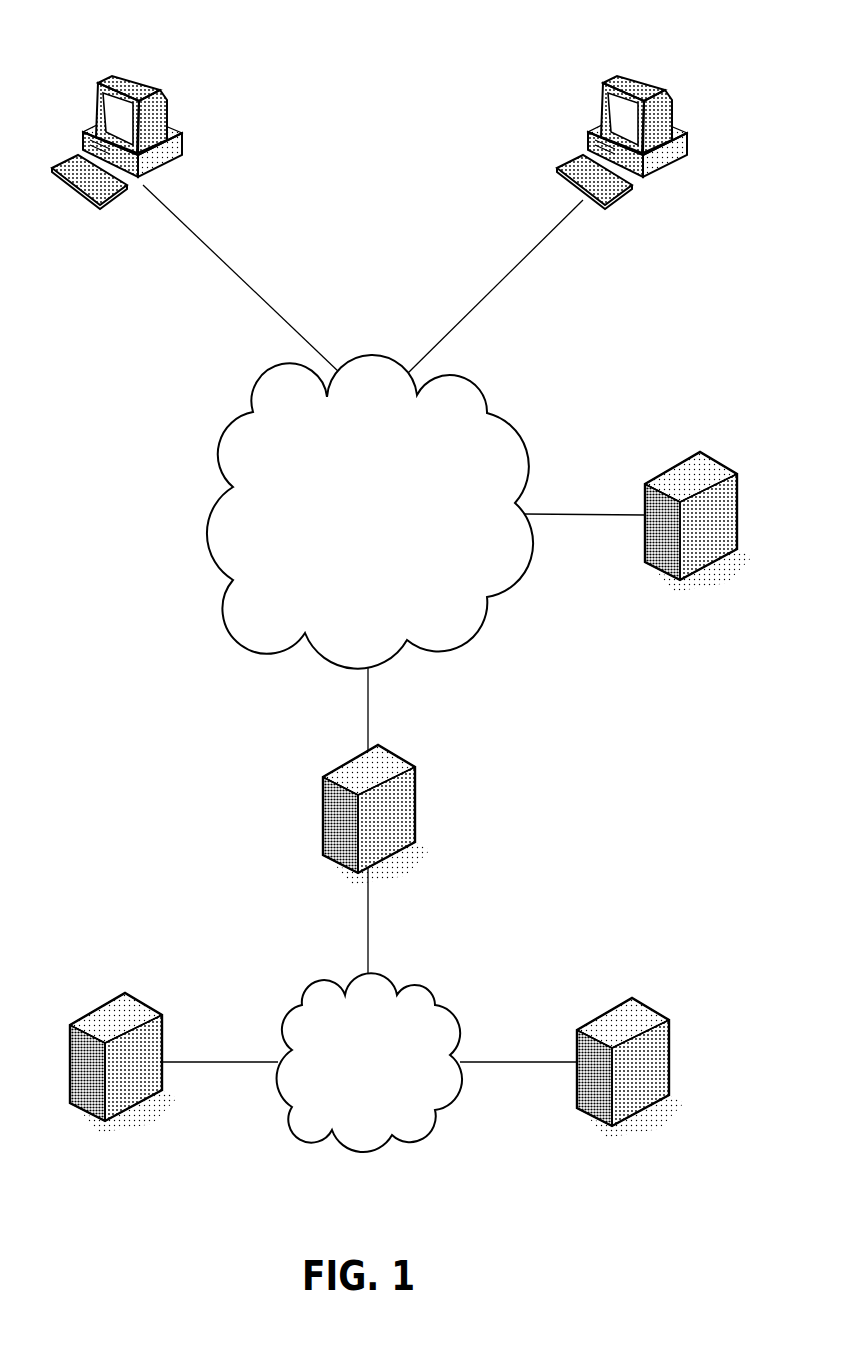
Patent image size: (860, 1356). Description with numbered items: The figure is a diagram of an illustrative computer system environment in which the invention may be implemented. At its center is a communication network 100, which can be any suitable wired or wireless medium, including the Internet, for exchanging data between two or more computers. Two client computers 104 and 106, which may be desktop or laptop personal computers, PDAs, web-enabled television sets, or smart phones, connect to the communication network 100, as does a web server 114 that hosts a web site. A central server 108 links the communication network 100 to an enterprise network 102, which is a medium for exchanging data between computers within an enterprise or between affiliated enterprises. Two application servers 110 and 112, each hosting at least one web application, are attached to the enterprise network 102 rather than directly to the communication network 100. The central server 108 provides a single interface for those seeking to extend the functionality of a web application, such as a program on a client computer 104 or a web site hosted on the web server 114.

The communication network 100 is at (370, 512).
The enterprise network 102 is at (370, 1062).
The client computer 104 is at (165, 77).
The client computer 106 is at (672, 77).
The central server 108 is at (410, 745).
The application server 110 is at (155, 992).
The application server 112 is at (663, 997).
The web server 114 is at (732, 452).